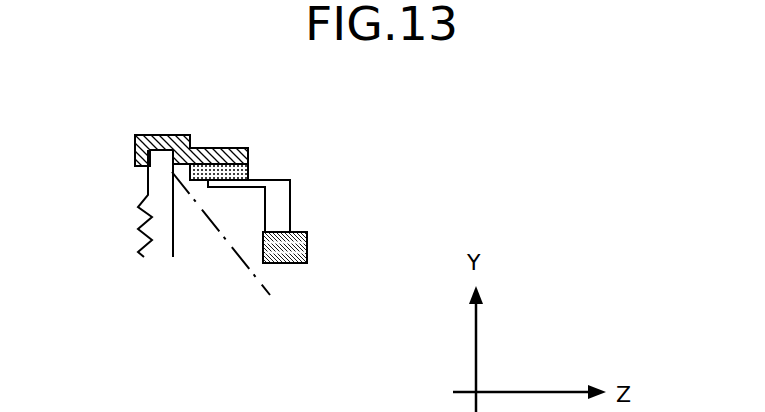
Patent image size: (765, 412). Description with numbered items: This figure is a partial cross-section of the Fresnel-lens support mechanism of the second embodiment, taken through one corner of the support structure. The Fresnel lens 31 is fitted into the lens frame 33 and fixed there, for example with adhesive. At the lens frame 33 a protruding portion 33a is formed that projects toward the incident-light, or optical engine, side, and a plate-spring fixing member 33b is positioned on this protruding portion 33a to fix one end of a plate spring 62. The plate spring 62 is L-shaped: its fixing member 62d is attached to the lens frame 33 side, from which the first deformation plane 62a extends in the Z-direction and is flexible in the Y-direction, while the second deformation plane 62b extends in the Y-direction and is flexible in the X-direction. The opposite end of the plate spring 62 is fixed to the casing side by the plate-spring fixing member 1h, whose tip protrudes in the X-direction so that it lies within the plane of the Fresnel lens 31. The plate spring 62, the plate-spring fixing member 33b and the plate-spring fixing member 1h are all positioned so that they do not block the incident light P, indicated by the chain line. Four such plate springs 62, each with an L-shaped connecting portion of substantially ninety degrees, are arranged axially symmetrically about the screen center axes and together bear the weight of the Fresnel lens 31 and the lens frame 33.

The lens frame 33 is at (144, 135).
The protruding portion 33a is at (205, 148).
The plate-spring fixing member 33b is at (224, 175).
The Fresnel lens 31 is at (155, 207).
The plate spring 62 is at (282, 200).
The first deformation plane 62a is at (278, 184).
The second deformation plane 62b is at (283, 223).
The fixing member 62d is at (250, 154).
The plate-spring fixing member 1h is at (305, 245).
The incident light P is at (243, 264).